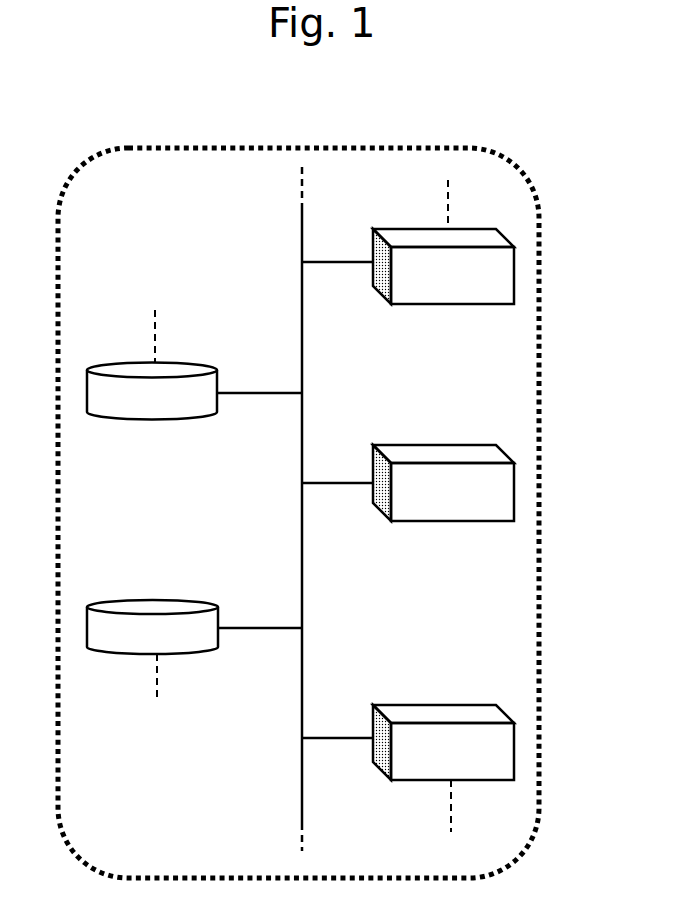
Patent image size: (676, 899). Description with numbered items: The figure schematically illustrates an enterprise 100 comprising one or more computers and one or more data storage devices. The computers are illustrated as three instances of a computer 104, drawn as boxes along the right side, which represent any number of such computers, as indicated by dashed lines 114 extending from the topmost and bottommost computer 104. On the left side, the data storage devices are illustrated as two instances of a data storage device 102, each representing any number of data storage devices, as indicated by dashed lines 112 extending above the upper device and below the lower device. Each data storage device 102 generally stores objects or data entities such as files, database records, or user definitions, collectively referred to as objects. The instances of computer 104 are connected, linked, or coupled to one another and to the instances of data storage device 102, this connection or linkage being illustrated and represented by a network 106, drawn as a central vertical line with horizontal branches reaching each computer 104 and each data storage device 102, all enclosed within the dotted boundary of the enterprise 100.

The enterprise 100 is at (369, 134).
The data storage device 102 is at (183, 419).
The computer 104 is at (477, 304).
The network 106 is at (243, 393).
The dashed lines 112 is at (156, 345).
The dashed lines 114 is at (447, 215).